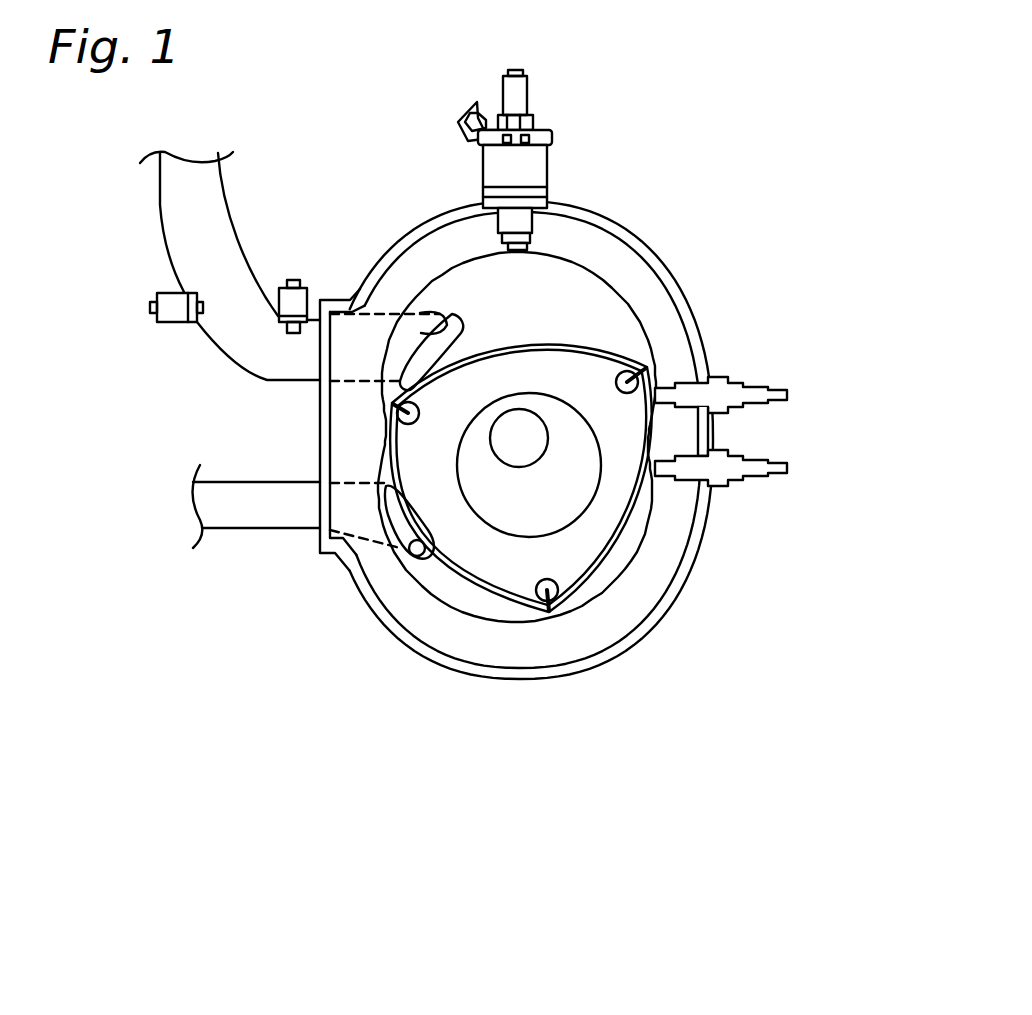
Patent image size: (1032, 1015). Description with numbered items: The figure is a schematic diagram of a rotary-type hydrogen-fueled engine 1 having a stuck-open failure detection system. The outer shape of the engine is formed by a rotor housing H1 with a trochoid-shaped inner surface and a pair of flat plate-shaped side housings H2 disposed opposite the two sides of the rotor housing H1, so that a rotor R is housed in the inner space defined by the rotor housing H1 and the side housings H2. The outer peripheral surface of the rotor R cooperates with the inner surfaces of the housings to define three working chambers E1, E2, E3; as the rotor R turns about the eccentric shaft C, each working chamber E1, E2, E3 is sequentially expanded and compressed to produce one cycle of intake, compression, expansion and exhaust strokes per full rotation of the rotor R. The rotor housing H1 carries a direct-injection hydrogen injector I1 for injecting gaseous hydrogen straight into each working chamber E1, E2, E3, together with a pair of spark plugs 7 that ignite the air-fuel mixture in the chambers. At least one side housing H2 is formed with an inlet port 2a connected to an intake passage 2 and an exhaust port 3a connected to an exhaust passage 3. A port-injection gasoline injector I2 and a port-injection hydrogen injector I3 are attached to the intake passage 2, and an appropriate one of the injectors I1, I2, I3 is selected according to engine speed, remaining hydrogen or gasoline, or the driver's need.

The hydrogen-fueled engine 1 is at (594, 708).
The intake passage 2 is at (160, 200).
The inlet port 2a is at (440, 328).
The exhaust passage 3 is at (225, 530).
The exhaust port 3a is at (440, 548).
The spark plugs 7 is at (787, 393).
The eccentric shaft C is at (518, 420).
The direct-injection hydrogen injector I1 is at (550, 163).
The port-injection gasoline injector I2 is at (280, 318).
The port-injection hydrogen injector I3 is at (173, 325).
The working chamber E1 is at (582, 291).
The working chamber E2 is at (613, 567).
The working chamber E3 is at (467, 593).
The rotor housing H1 is at (515, 683).
The side housings H2 is at (597, 327).
The rotor R is at (598, 373).